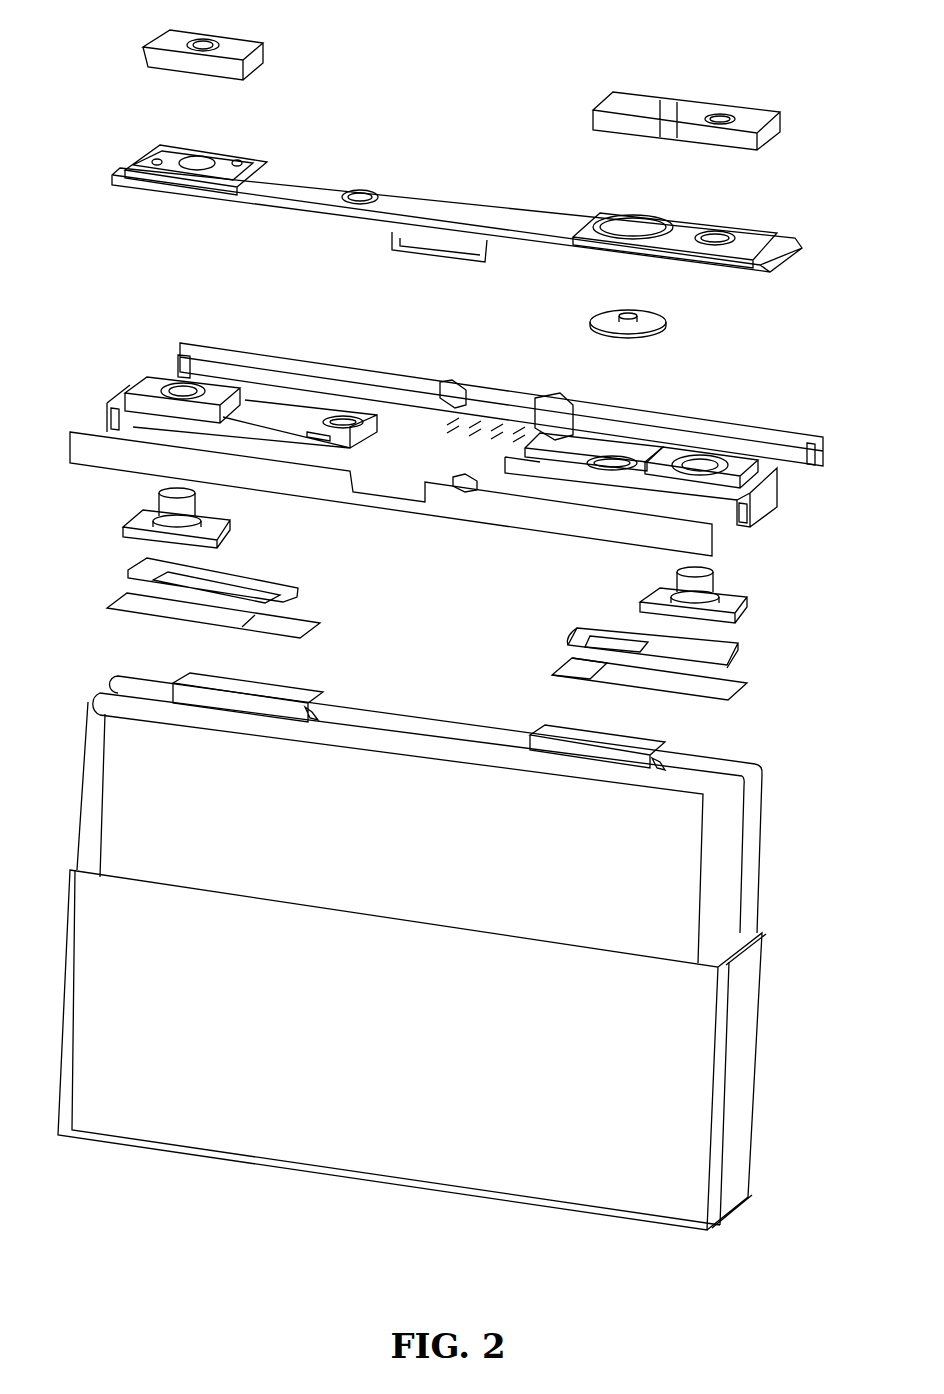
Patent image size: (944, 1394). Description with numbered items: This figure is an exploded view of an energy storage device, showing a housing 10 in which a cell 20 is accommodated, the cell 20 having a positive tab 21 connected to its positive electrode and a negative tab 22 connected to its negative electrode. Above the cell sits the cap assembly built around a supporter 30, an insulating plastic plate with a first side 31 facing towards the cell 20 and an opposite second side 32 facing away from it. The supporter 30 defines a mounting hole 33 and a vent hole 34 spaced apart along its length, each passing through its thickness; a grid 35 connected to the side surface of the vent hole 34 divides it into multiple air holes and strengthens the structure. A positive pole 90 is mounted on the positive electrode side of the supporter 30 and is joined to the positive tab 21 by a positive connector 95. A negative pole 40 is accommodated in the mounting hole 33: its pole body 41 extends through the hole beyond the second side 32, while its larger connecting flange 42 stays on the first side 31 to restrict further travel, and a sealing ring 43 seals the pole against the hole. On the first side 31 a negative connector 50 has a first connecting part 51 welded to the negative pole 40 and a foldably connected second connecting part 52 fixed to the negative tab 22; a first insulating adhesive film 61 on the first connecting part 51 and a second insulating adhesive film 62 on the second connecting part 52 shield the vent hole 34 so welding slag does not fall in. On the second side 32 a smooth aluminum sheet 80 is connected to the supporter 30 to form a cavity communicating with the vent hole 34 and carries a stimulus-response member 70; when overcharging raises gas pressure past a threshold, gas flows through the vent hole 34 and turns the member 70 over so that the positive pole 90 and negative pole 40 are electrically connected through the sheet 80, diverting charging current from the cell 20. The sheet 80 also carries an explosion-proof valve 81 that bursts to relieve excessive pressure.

The housing 10 is at (735, 1145).
The cell 20 is at (460, 803).
The positive tab 21 is at (298, 690).
The negative tab 22 is at (665, 745).
The supporter 30 is at (762, 500).
The first side 31 is at (143, 427).
The second side 32 is at (438, 422).
The mounting hole 33 is at (710, 455).
The vent hole 34 is at (640, 455).
The grid 35 is at (620, 460).
The negative pole 40 is at (691, 585).
The pole body 41 is at (713, 585).
The connecting flange 42 is at (743, 605).
The sealing ring 43 is at (677, 590).
The negative connector 50 is at (661, 629).
The first connecting part 51 is at (667, 643).
The second connecting part 52 is at (577, 638).
The first insulating adhesive film 61 is at (645, 664).
The second insulating adhesive film 62 is at (567, 668).
The stimulus-response member 70 is at (655, 320).
The smooth aluminum sheet 80 is at (457, 186).
The explosion-proof valve 81 is at (455, 210).
The positive pole 90 is at (227, 537).
The positive connector 95 is at (133, 573).